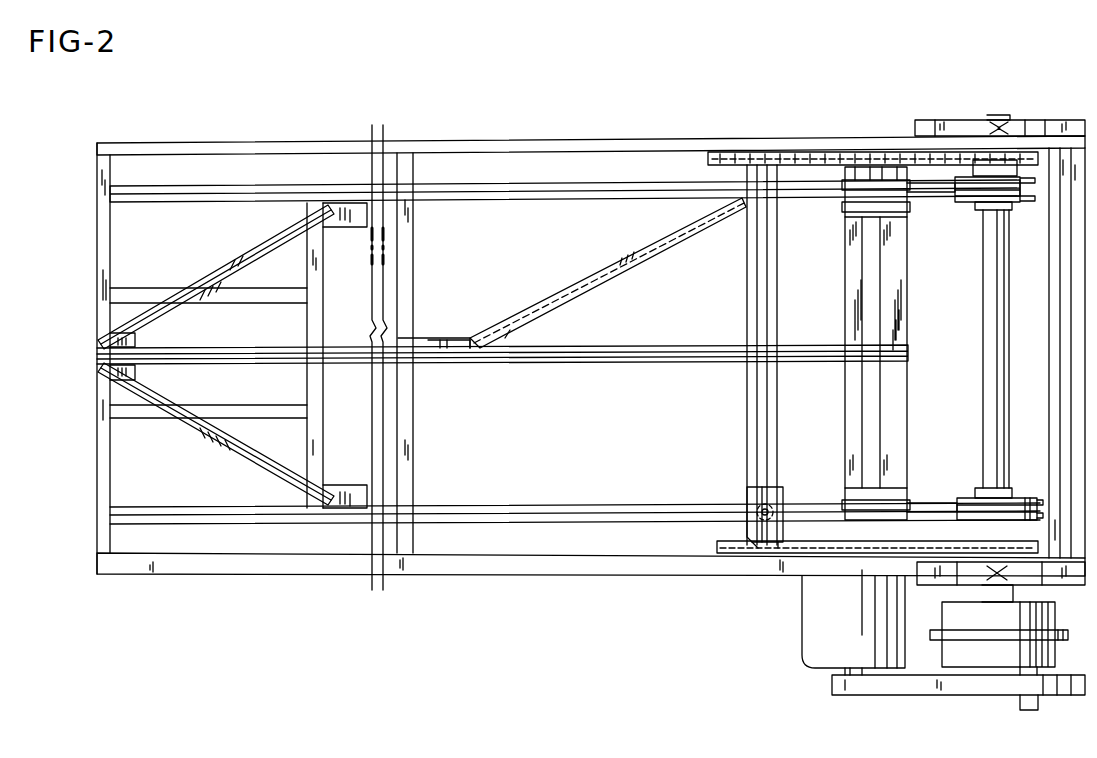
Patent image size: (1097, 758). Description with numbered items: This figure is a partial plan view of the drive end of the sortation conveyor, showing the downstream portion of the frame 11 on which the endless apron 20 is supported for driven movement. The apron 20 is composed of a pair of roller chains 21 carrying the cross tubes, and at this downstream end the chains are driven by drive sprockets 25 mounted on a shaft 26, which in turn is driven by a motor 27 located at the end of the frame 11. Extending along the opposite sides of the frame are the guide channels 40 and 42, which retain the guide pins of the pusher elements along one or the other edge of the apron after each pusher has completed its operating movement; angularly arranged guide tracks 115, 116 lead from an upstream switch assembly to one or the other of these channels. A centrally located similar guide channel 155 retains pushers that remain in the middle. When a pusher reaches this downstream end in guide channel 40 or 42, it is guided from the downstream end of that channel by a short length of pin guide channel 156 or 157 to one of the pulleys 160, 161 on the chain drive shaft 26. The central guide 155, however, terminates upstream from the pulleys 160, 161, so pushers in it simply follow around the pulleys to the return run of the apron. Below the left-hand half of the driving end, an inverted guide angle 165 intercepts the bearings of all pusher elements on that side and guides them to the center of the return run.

The frame 11 is at (440, 140).
The endless apron 20 is at (1047, 222).
The roller chains 21 is at (738, 160).
The drive sprockets 25 is at (1022, 160).
The shaft 26 is at (983, 292).
The motor 27 is at (850, 618).
The guide channel 40 is at (210, 186).
The guide channel 42 is at (222, 527).
The angularly arranged guide track 115 is at (220, 262).
The angularly arranged guide track 116 is at (222, 447).
The guide channel 155 is at (553, 365).
The pin guide channel 156 is at (930, 185).
The pin guide channel 157 is at (927, 497).
The pulley 160 is at (1035, 176).
The pulley 161 is at (1040, 520).
The inverted guide angle 165 is at (678, 242).